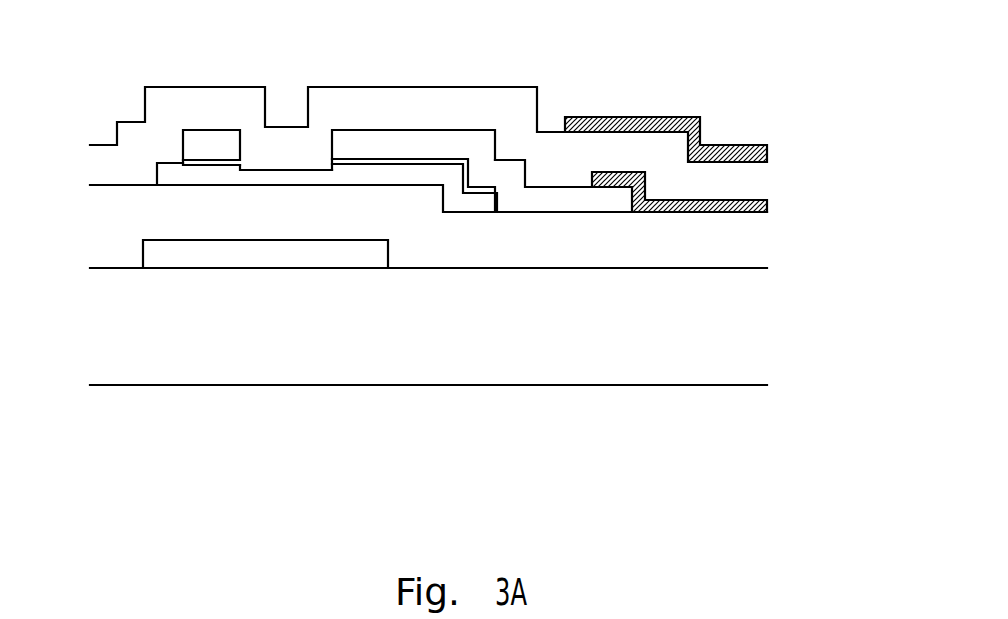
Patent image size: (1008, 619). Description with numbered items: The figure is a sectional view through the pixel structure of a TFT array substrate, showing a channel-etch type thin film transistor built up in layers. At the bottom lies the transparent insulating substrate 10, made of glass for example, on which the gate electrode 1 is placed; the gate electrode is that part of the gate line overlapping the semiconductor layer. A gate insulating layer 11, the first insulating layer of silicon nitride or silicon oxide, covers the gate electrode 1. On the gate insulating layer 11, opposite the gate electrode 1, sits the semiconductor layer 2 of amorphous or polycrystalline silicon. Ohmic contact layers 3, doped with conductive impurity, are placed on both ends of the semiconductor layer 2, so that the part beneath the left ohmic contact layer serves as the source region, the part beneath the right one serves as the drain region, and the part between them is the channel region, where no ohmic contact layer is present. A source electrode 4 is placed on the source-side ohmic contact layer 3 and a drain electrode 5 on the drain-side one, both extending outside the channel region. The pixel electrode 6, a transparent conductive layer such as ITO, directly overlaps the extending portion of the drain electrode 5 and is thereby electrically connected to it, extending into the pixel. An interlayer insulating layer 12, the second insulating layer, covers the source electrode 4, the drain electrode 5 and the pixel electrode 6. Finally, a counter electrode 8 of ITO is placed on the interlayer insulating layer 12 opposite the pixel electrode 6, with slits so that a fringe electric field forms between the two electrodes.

The gate electrode 1 is at (253, 257).
The semiconductor layer 2 is at (277, 177).
The ohmic contact layer 3 is at (191, 153).
The source electrode 4 is at (213, 140).
The drain electrode 5 is at (376, 140).
The pixel electrode 6 is at (768, 208).
The counter electrode 8 is at (768, 152).
The transparent insulating substrate 10 is at (755, 335).
The gate insulating layer 11 is at (755, 243).
The interlayer insulating layer 12 is at (753, 183).